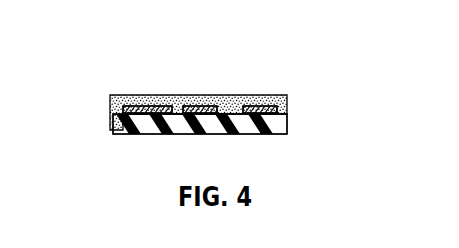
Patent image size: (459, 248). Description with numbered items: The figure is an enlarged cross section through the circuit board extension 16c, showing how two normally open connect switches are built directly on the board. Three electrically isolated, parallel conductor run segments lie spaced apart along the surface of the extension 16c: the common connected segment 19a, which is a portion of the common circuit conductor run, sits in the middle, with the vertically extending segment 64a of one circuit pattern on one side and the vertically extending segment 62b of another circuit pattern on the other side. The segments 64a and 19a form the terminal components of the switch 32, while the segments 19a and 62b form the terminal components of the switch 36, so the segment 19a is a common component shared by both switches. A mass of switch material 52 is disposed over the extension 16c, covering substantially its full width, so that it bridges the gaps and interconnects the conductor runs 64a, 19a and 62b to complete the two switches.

The circuit board extension 16c is at (131, 116).
The vertically extending segment 64a is at (138, 106).
The common connected segment 19a is at (203, 104).
The switch material 52 is at (242, 104).
The switch 32 is at (176, 84).
The switch 36 is at (238, 86).
The vertically extending segment 62b is at (266, 107).